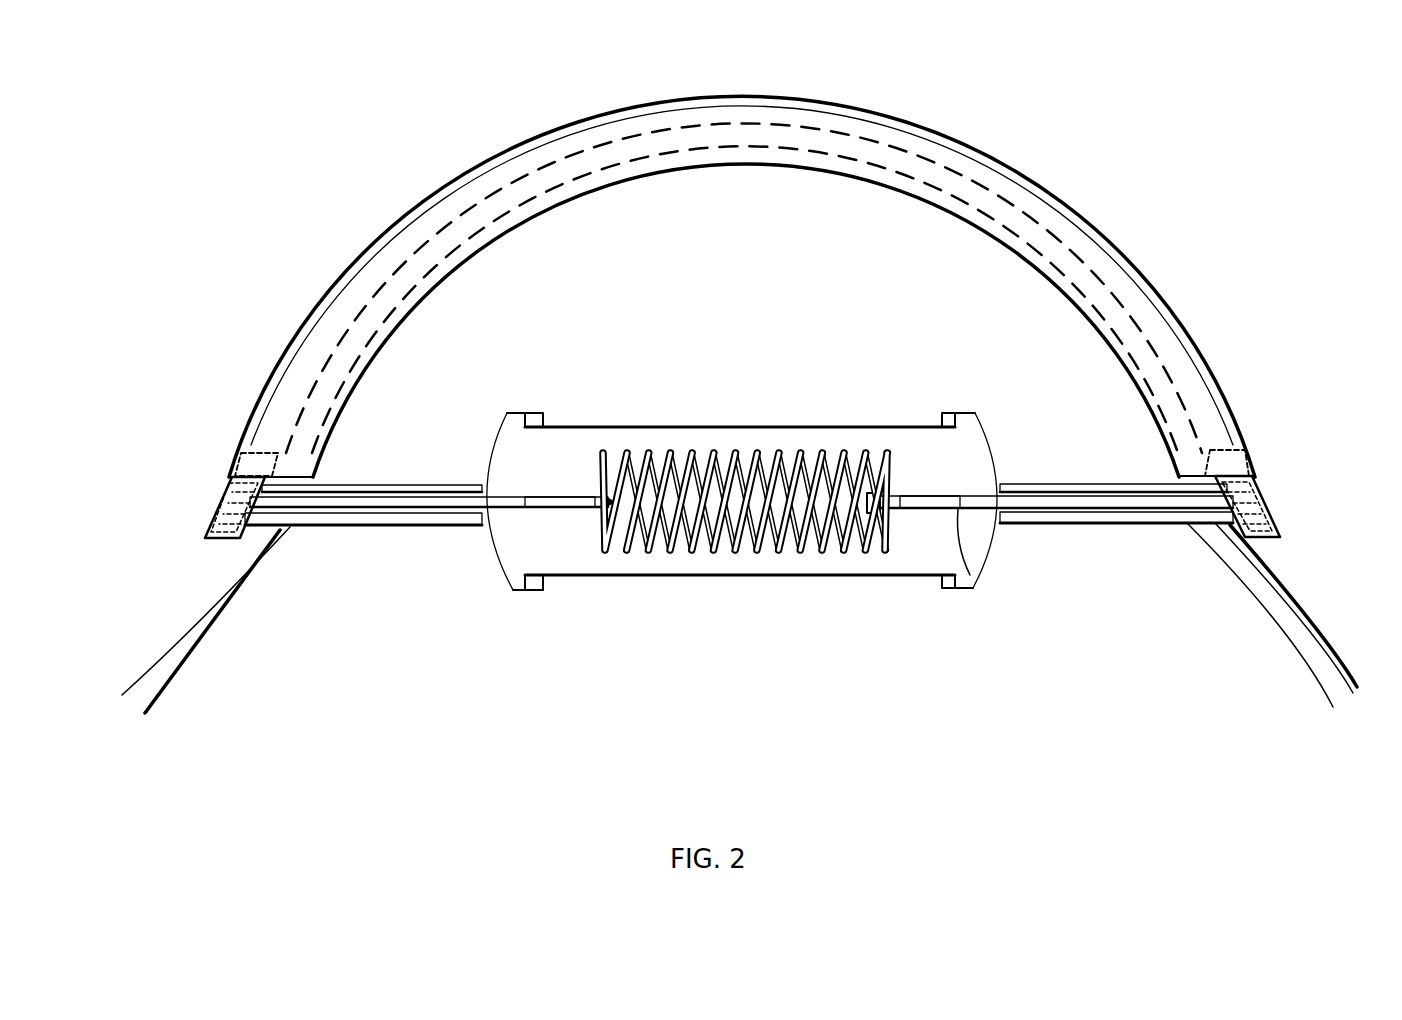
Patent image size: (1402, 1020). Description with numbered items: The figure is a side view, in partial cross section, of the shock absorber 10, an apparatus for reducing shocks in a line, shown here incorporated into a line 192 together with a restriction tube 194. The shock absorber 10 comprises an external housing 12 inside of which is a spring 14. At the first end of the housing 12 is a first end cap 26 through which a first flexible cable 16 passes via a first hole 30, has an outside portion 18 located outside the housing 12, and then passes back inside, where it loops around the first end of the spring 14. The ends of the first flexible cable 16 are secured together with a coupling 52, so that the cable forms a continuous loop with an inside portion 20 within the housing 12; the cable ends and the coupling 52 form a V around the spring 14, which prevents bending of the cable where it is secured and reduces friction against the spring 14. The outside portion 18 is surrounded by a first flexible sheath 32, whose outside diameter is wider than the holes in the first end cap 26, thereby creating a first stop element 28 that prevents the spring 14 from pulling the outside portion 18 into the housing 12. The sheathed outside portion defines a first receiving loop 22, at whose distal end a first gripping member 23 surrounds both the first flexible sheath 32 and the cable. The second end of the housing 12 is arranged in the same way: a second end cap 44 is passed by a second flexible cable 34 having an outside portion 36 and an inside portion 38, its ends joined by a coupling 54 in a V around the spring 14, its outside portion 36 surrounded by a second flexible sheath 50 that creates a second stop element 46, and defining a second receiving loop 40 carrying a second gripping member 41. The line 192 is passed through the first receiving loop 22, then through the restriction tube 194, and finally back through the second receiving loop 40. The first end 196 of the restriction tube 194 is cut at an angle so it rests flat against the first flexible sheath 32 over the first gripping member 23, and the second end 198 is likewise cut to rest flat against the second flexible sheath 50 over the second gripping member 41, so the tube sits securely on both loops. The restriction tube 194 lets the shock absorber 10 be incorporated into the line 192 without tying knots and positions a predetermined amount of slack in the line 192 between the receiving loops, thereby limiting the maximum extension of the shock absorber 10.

The shock absorber 10 is at (752, 457).
The external housing 12 is at (790, 425).
The spring 14 is at (762, 558).
The first flexible cable 16 is at (1006, 510).
The outside portion of the first flexible cable 18 is at (1103, 505).
The inside portion of the first flexible cable 20 is at (930, 500).
The first receiving loop 22 is at (1056, 511).
The first gripping member 23 is at (1262, 532).
The first end cap 26 is at (983, 578).
The first stop element 28 is at (985, 524).
The first hole 30 is at (955, 588).
The first flexible sheath 32 is at (1052, 523).
The second flexible cable 34 is at (489, 507).
The outside portion of the second flexible cable 36 is at (372, 506).
The inside portion of the second flexible cable 38 is at (540, 505).
The second receiving loop 40 is at (301, 540).
The second gripping member 41 is at (220, 540).
The second end cap 44 is at (500, 578).
The second stop element 46 is at (429, 533).
The second flexible sheath 50 is at (415, 488).
The coupling 52 is at (875, 507).
The coupling 54 is at (608, 492).
The line 192 is at (1237, 570).
The restriction tube 194 is at (1058, 232).
The first end of the restriction tube 196 is at (1246, 410).
The second end of the restriction tube 198 is at (228, 438).